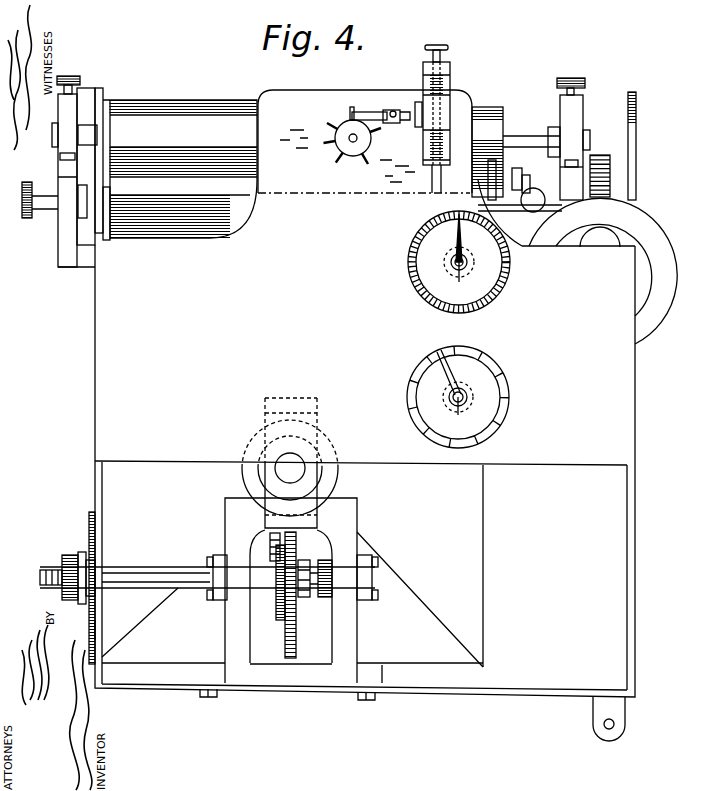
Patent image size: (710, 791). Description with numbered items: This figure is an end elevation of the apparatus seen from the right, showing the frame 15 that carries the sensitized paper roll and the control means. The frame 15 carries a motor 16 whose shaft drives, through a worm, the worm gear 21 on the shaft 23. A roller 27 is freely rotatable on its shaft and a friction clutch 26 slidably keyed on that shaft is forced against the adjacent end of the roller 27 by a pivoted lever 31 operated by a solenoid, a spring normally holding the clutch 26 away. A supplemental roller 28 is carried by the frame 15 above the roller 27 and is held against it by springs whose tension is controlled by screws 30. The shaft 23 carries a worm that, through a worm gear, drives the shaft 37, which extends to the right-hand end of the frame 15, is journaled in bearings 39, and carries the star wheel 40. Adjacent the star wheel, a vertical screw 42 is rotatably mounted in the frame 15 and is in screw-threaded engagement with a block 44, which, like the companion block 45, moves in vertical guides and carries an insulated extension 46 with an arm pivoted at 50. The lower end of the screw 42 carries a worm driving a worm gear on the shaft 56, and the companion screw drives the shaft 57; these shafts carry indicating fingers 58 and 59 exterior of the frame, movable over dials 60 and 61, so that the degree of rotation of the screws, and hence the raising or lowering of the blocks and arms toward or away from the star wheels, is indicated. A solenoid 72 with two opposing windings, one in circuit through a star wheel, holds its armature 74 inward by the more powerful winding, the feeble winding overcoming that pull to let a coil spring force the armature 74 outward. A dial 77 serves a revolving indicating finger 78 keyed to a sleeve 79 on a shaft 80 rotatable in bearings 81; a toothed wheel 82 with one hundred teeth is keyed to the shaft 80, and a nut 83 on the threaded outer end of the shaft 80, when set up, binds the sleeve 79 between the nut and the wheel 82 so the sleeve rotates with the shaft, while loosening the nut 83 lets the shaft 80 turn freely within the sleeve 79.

The frame 15 is at (95, 390).
The motor 16 is at (641, 339).
The worm gear 21 is at (600, 178).
The shaft 23 is at (478, 199).
The clutch 26 is at (532, 186).
The roller 27 is at (176, 207).
The supplemental roller 28 is at (176, 163).
The screws 30 is at (78, 80).
The lever 31 is at (512, 222).
The shaft 37 is at (333, 137).
The bearings 39 is at (286, 92).
The star wheel 40 is at (336, 163).
The vertical screw 42 is at (440, 84).
The block 44 is at (443, 100).
The block 45 is at (364, 111).
The extension 46 is at (408, 120).
The pivot 50 is at (392, 111).
The shaft 56 is at (457, 282).
The shaft 57 is at (461, 414).
The indicating finger 58 is at (455, 250).
The indicating finger 59 is at (458, 397).
The dial 60 is at (473, 238).
The dial 61 is at (462, 372).
The solenoid 72 is at (246, 474).
The armature 74 is at (270, 540).
The dial 77 is at (92, 628).
The indicating finger 78 is at (90, 520).
The sleeve 79 is at (142, 562).
The shaft 80 is at (310, 596).
The bearings 81 is at (222, 612).
The toothed wheel 82 is at (296, 645).
The nut 83 is at (72, 556).